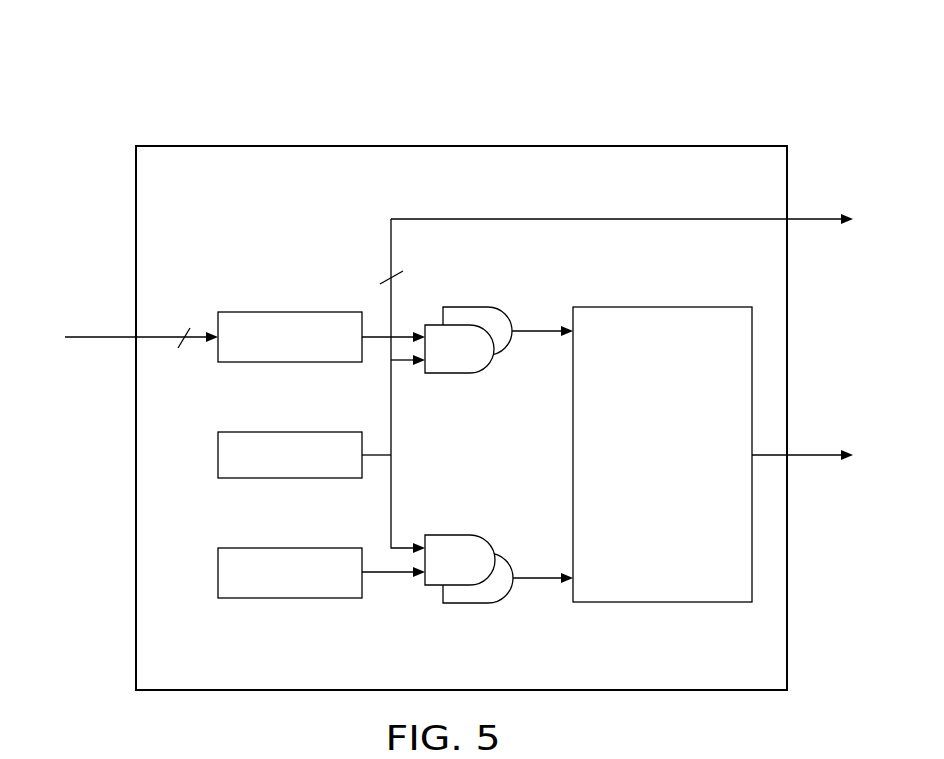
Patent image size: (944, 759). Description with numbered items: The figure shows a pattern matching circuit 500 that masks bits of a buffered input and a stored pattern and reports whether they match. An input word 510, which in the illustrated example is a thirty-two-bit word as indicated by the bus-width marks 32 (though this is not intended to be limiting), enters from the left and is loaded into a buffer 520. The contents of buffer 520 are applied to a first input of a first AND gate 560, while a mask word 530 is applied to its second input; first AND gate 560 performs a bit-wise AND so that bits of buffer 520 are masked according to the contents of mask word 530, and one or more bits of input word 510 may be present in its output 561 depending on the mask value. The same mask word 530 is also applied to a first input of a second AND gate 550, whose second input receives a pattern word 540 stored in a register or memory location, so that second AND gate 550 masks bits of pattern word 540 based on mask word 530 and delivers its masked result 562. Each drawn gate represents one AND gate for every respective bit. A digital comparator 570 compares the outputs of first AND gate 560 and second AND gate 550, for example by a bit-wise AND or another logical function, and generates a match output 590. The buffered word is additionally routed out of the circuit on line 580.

The pattern matching circuit 500 is at (262, 80).
The input word 510 is at (101, 335).
The buffer 520 is at (291, 311).
The mask word 530 is at (291, 479).
The pattern word 540 is at (291, 599).
The second AND gate 550 is at (480, 615).
The first AND gate 560 is at (480, 297).
The output 561 is at (540, 326).
The masked pattern signal 562 is at (537, 582).
The digital comparator 570 is at (686, 503).
The pass-through data output 580 is at (822, 218).
The match output 590 is at (822, 459).
The 32-bit bus width 32 is at (278, 303).